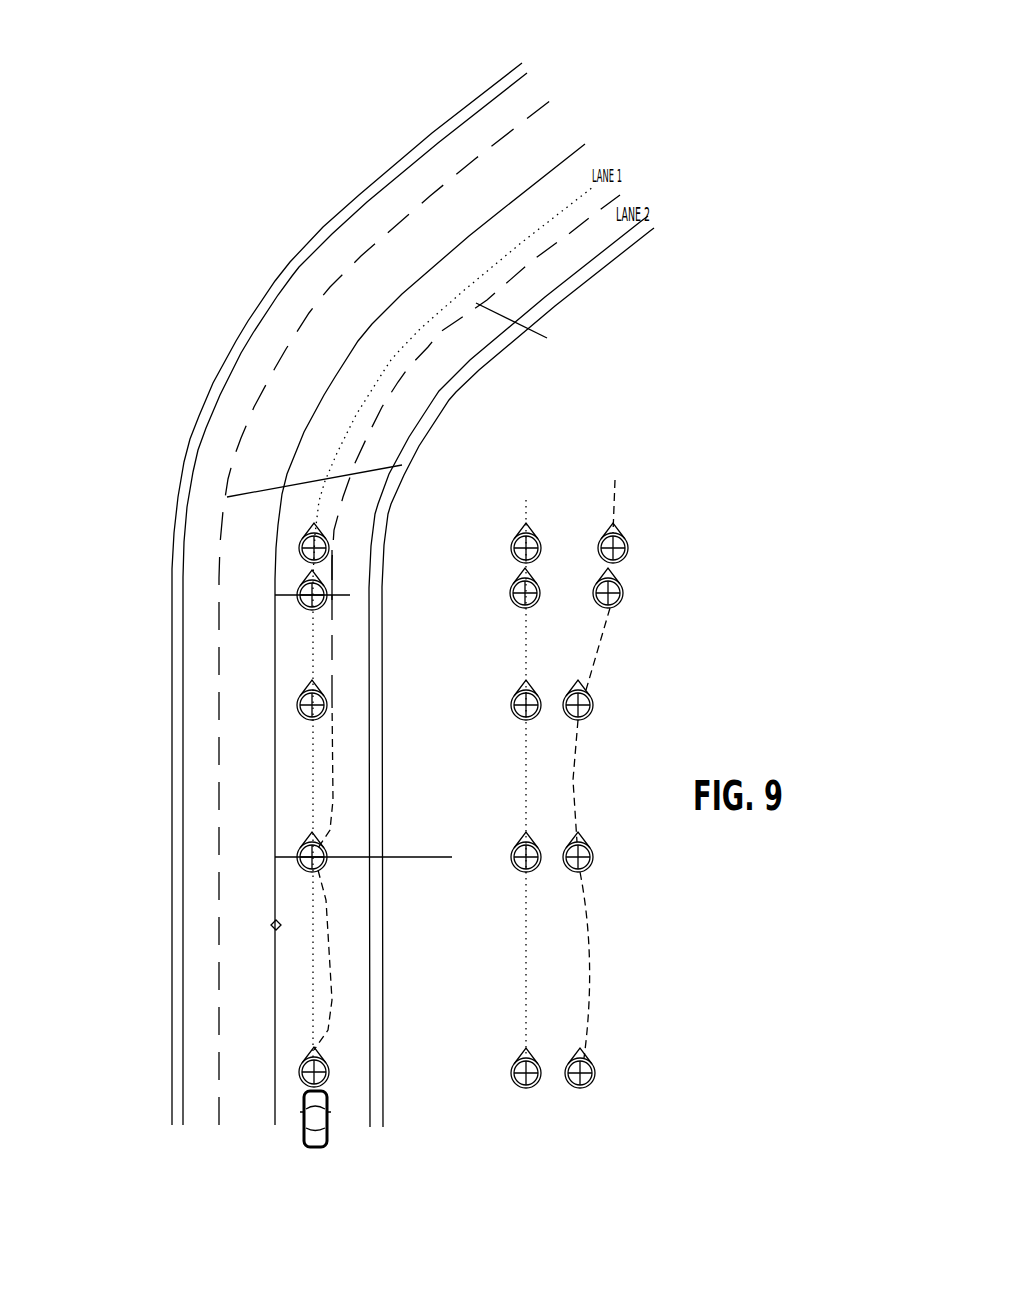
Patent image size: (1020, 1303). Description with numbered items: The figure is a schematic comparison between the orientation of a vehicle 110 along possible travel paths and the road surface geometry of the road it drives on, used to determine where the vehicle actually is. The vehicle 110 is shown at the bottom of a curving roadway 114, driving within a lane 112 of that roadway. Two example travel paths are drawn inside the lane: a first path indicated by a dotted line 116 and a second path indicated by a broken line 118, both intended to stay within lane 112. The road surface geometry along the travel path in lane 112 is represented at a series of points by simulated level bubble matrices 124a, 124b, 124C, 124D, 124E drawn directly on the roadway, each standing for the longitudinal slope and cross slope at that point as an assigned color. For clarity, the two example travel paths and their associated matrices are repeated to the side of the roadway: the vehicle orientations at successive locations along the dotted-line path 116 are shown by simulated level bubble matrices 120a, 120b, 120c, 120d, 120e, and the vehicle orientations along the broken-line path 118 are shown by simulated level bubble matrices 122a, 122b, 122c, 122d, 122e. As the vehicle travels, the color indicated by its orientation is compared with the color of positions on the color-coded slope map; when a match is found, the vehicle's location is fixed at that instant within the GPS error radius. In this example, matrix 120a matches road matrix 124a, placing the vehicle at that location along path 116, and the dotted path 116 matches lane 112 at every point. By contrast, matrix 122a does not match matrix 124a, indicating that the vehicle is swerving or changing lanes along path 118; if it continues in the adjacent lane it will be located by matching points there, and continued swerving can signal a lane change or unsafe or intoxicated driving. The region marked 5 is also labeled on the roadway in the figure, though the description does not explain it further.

The lane change target region 5 is at (490, 327).
The vehicle 110 is at (328, 1140).
The lane 112 is at (288, 1047).
The roadway 114 is at (158, 1128).
The dotted line 116 is at (310, 633).
The broken line 118 is at (308, 737).
The simulated level bubble matrix 120a is at (514, 1063).
The simulated level bubble matrix 120b is at (513, 862).
The simulated level bubble matrix 120c is at (516, 714).
The simulated level bubble matrix 120d is at (509, 593).
The simulated level bubble matrix 120e is at (512, 548).
The simulated level bubble matrix 122a is at (591, 1068).
The simulated level bubble matrix 122b is at (589, 846).
The simulated level bubble matrix 122c is at (595, 712).
The simulated level bubble matrix 122d is at (617, 590).
The simulated level bubble matrix 122e is at (628, 534).
The simulated level bubble matrix 124a is at (314, 1047).
The simulated level bubble matrix 124b is at (318, 843).
The simulated level bubble matrix 124C is at (321, 712).
The simulated level bubble matrix 124D is at (300, 585).
The simulated level bubble matrix 124E is at (303, 535).